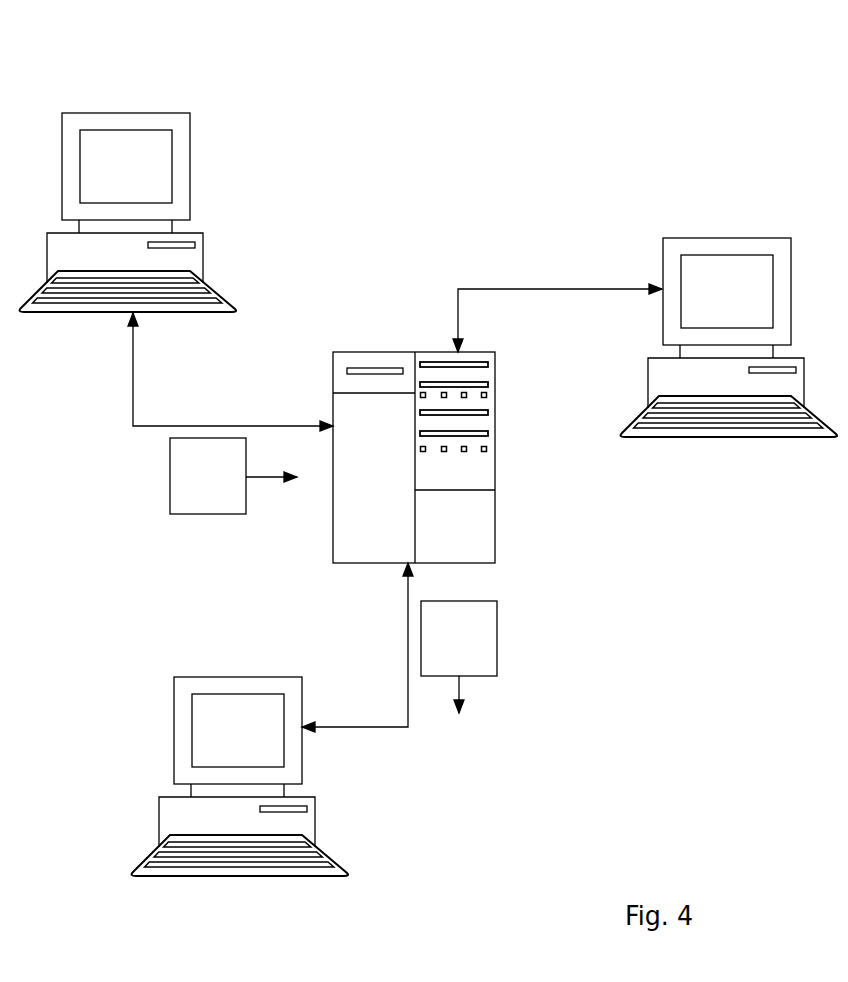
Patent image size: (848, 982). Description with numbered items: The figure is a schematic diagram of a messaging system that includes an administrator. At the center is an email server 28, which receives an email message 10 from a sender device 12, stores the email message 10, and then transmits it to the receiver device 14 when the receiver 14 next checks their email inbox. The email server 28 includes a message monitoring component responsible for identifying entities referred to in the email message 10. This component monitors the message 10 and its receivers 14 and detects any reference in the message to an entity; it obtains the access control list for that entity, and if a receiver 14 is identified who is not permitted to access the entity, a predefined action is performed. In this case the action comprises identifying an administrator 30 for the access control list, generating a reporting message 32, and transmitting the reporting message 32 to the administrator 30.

The email message 10 is at (170, 493).
The sender device 12 is at (145, 113).
The receiver device 14 is at (718, 238).
The email server 28 is at (497, 538).
The administrator 30 is at (174, 713).
The reporting message 32 is at (497, 650).